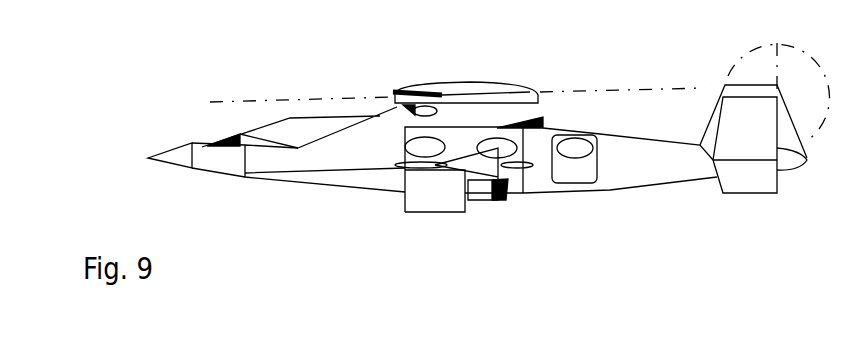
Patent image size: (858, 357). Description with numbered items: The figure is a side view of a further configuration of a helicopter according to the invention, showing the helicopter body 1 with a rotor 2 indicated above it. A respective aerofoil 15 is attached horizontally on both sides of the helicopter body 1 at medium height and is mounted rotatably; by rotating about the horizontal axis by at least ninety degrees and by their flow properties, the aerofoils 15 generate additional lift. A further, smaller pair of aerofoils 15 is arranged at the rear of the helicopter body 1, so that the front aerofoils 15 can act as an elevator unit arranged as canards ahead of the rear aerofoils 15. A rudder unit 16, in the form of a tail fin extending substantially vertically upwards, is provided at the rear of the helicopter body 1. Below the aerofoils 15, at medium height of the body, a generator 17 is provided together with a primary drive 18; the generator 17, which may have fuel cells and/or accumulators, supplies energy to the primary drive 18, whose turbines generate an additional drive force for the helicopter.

The helicopter body 1 is at (332, 156).
The rotor 2 is at (395, 92).
The aerofoil 15 is at (460, 168).
The rudder unit 16 is at (744, 140).
The generator 17 is at (420, 188).
The primary drive 18 is at (490, 200).